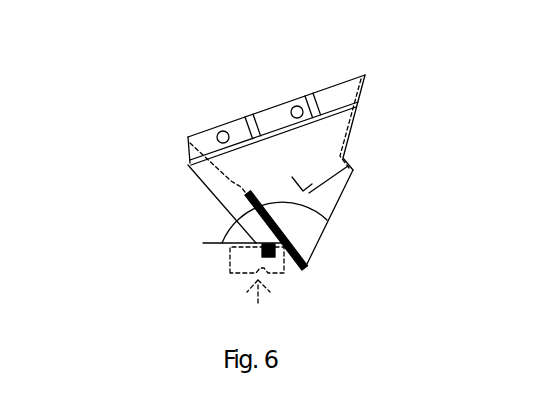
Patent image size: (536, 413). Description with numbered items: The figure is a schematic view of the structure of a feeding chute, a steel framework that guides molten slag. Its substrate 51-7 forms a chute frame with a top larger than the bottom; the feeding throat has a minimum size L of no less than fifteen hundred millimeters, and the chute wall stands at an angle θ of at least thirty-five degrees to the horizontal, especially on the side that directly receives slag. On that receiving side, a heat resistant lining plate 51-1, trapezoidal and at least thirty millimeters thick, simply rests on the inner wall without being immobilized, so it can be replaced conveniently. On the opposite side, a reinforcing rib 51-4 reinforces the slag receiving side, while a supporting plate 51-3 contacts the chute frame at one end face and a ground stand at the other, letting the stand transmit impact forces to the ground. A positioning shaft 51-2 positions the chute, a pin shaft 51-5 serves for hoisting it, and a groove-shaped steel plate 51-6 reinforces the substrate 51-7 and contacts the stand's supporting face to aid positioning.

The heat resistant lining plate 51-1 is at (327, 239).
The positioning shaft 51-2 is at (327, 239).
The supporting plate 51-3 is at (263, 245).
The reinforcing rib 51-4 is at (232, 181).
The pin shaft 51-5 is at (221, 139).
The steel plate 51-6 is at (291, 128).
The substrate 51-7 is at (338, 125).